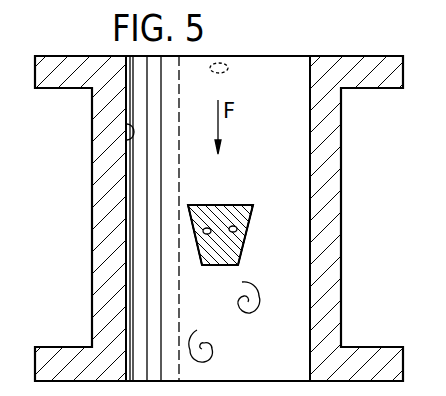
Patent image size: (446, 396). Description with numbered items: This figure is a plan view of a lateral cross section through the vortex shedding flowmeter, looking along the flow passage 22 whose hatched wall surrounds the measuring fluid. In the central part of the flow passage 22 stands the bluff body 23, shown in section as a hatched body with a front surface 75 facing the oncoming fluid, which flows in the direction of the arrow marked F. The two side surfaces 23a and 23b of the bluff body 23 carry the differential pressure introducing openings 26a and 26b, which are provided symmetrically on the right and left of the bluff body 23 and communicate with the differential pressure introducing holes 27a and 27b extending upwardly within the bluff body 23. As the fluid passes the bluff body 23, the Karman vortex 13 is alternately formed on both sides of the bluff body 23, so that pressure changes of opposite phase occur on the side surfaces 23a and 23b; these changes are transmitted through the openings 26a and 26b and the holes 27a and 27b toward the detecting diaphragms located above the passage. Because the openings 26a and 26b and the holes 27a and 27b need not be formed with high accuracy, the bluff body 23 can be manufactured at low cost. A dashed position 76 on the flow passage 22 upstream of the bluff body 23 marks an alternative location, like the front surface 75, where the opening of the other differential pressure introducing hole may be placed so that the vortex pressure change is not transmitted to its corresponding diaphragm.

The flow passage 22 is at (126, 128).
The position on the flow passage upstream of the bluff body 76 is at (222, 55).
The bluff body 23 is at (209, 195).
The front surface of the bluff body 75 is at (233, 205).
The differential pressure introducing hole 27b is at (200, 207).
The differential pressure introducing hole 27a is at (250, 210).
The differential pressure introducing opening 26a is at (237, 230).
The differential pressure introducing opening 26b is at (204, 237).
The side surface of the bluff body 23b is at (203, 231).
The side surface of the bluff body 23a is at (242, 252).
The Karman vortex 13 is at (252, 308).